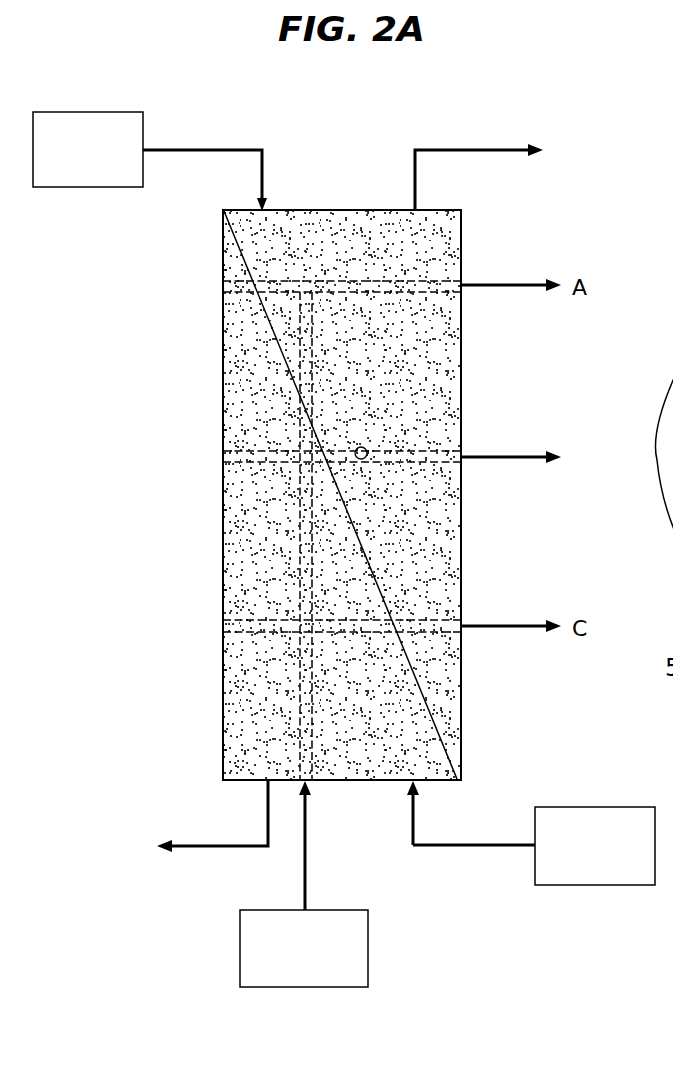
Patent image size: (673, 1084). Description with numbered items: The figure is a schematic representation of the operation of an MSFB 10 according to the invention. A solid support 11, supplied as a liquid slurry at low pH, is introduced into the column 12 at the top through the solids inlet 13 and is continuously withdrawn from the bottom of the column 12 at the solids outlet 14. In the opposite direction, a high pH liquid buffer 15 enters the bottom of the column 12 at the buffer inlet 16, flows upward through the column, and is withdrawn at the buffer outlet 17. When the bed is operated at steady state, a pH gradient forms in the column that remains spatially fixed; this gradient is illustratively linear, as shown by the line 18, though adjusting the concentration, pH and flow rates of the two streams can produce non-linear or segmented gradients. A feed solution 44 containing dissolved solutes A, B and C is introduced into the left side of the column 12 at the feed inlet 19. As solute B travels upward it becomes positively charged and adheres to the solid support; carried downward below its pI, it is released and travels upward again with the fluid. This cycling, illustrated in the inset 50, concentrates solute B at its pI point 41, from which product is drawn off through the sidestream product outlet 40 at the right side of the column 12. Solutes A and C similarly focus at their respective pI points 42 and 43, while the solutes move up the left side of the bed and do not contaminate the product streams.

The MSFB 10 is at (463, 705).
The solid support 11 is at (112, 112).
The column 12 is at (462, 245).
The solids inlet 13 is at (263, 210).
The solids outlet 14 is at (266, 782).
The high pH liquid buffer 15 is at (536, 868).
The buffer inlet 16 is at (412, 782).
The buffer outlet 17 is at (428, 210).
The pH gradient line 18 is at (368, 551).
The feed inlet 19 is at (313, 988).
The sidestream product outlet 40 is at (495, 456).
The pI point of solute B 41 is at (237, 452).
The pI point of solute A 42 is at (222, 287).
The pI point of solute C 43 is at (225, 632).
The feed solution 44 is at (308, 785).
The inset 50 is at (367, 448).